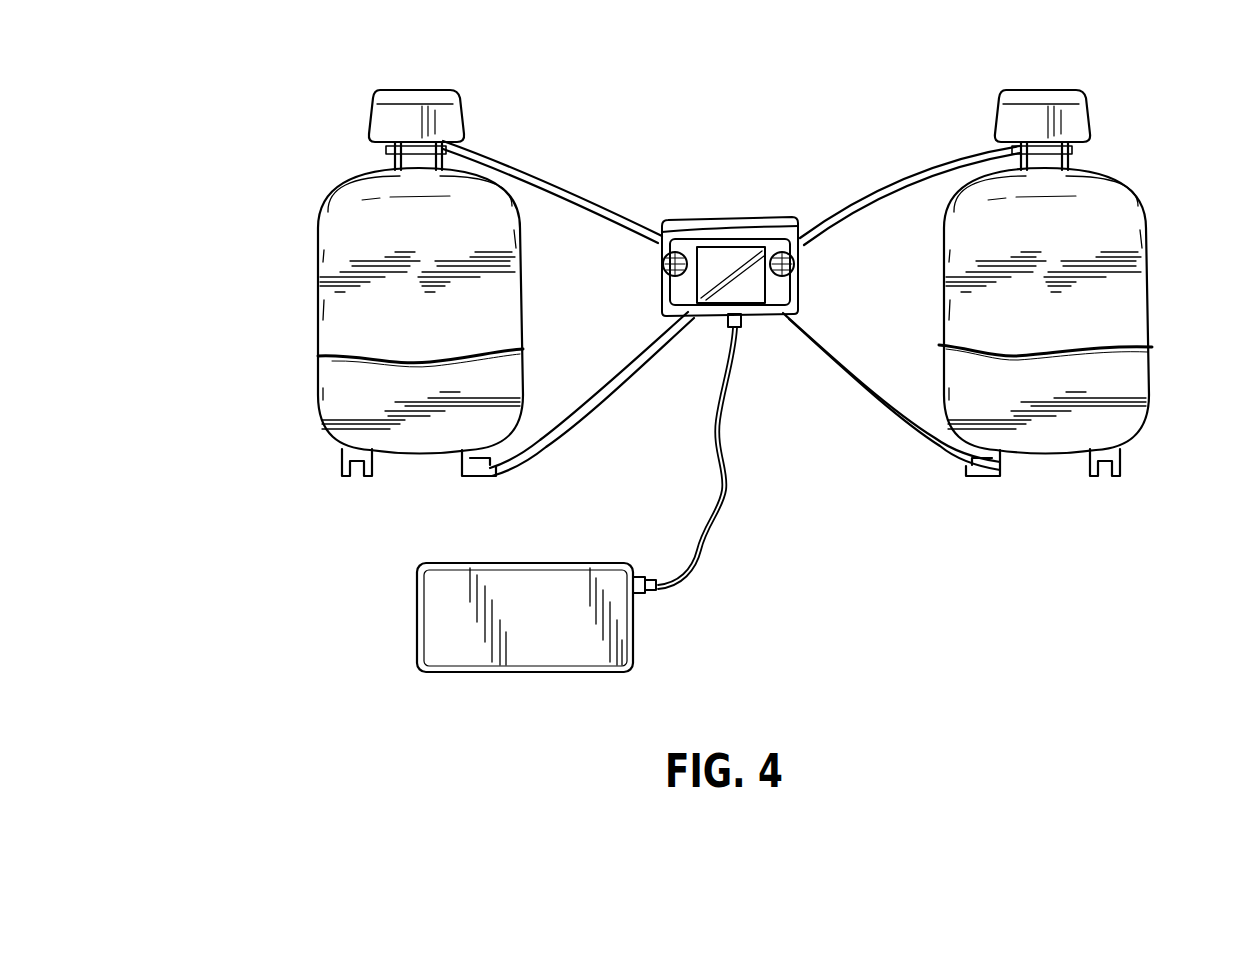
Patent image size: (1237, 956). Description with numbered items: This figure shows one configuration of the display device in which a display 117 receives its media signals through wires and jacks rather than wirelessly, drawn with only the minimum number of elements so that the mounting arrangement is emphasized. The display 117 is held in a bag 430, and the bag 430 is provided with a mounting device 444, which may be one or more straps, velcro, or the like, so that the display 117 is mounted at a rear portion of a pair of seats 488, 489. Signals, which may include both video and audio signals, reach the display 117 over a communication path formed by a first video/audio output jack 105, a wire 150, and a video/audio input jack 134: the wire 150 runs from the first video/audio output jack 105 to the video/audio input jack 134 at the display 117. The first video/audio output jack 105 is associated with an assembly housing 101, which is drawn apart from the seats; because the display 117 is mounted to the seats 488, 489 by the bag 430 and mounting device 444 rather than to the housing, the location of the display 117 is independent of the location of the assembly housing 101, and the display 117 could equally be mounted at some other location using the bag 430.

The seat 488 is at (340, 305).
The seat 489 is at (1115, 333).
The mounting device 444 is at (602, 212).
The bag 430 is at (700, 223).
The display 117 is at (723, 262).
The video/audio input jack 134 is at (722, 328).
The wire 150 is at (700, 572).
The first video/audio output jack 105 is at (655, 597).
The assembly housing 101 is at (462, 672).